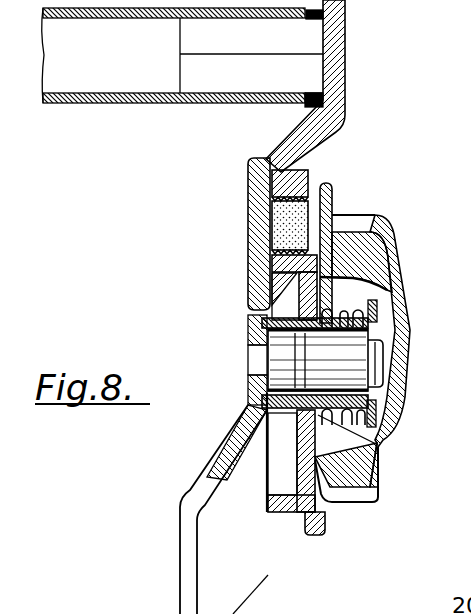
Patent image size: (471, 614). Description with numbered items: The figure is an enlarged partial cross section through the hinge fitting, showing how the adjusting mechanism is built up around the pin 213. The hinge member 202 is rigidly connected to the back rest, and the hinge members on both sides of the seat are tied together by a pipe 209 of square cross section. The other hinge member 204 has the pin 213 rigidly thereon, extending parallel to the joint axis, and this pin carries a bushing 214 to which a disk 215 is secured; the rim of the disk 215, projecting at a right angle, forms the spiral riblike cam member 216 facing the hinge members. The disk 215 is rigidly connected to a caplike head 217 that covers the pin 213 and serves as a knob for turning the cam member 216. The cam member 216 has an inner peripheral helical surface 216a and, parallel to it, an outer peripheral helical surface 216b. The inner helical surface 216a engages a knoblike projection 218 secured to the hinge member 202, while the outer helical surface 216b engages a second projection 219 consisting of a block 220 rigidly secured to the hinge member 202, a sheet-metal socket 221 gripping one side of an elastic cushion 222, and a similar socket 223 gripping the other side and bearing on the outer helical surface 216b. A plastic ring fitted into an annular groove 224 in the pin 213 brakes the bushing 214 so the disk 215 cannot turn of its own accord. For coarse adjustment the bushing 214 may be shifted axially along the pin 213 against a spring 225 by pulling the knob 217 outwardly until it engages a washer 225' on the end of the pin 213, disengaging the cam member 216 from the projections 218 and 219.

The pipe 209 is at (100, 99).
The hinge member 202 is at (343, 63).
The block 220 is at (279, 181).
The socket 221 is at (270, 200).
The elastic cushion 222 is at (272, 224).
The socket 223 is at (272, 254).
The knoblike projection 218 is at (272, 291).
The second projection 219 is at (319, 178).
The caplike head 217 is at (380, 243).
The disk 215 is at (320, 292).
The annular groove 224 is at (265, 348).
The bushing 214 is at (268, 406).
The pin 213 is at (357, 357).
The washer 225' is at (392, 308).
The spring 225 is at (388, 440).
The hinge member 204 is at (242, 445).
The inner peripheral helical surface 216a is at (235, 470).
The riblike cam member 216 is at (267, 500).
The outer peripheral helical surface 216b is at (281, 515).